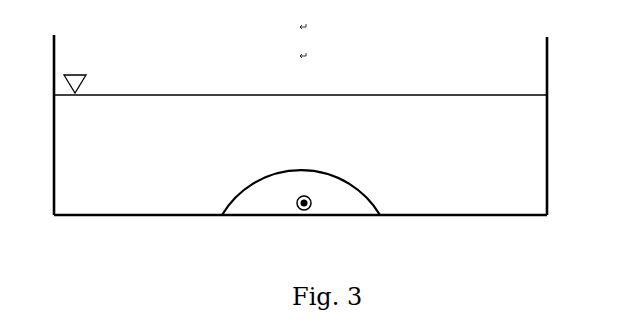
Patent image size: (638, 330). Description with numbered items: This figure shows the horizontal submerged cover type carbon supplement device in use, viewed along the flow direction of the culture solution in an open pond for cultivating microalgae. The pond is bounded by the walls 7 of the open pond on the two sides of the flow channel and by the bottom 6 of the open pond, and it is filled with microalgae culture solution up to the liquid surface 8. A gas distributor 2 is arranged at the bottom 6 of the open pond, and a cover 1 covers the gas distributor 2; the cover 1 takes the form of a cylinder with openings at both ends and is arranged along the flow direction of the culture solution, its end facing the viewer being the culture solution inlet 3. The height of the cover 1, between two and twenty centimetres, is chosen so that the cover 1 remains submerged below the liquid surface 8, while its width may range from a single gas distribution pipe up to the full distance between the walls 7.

The cover 1 is at (322, 171).
The gas distributor 2 is at (315, 200).
The culture solution inlet 3 is at (247, 201).
The bottom of an open pond 6 is at (162, 212).
The wall of an open pond 7 is at (57, 152).
The surface of microalgae culture solution 8 is at (311, 93).